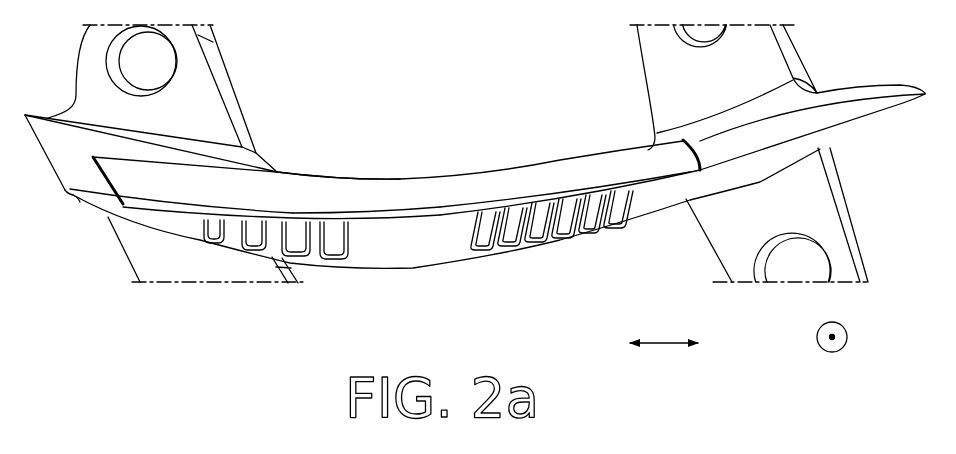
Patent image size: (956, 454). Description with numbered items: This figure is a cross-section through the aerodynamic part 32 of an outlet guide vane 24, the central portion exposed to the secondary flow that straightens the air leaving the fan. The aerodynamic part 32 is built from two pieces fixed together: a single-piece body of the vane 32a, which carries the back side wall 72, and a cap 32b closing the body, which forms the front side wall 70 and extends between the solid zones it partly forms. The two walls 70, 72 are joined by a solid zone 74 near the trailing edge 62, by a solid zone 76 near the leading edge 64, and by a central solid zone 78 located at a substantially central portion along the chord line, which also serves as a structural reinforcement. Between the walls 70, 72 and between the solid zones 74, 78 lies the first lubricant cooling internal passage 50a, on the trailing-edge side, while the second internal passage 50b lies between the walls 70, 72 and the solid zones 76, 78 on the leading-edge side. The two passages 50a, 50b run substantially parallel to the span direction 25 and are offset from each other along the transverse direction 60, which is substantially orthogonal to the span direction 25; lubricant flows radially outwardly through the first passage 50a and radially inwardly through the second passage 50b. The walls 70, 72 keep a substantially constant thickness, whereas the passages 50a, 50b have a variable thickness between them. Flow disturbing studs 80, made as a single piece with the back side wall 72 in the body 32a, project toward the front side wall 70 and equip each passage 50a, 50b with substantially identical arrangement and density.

The outlet guide vane 24 is at (318, 161).
The span direction 25 is at (826, 350).
The aerodynamic part 32 is at (517, 150).
The body of the vane 32a is at (146, 224).
The cap 32b is at (396, 140).
The first lubricant cooling internal passage 50a is at (573, 173).
The second internal passage 50b is at (287, 193).
The transverse direction 60 is at (663, 347).
The trailing edge 62 is at (899, 113).
The leading edge 64 is at (76, 202).
The front side wall 70 is at (403, 220).
The back side wall 72 is at (333, 263).
The solid zone 74 is at (690, 192).
The solid zone 76 is at (190, 228).
The central solid zone 78 is at (413, 250).
The flow disturbing studs 80 is at (327, 241).